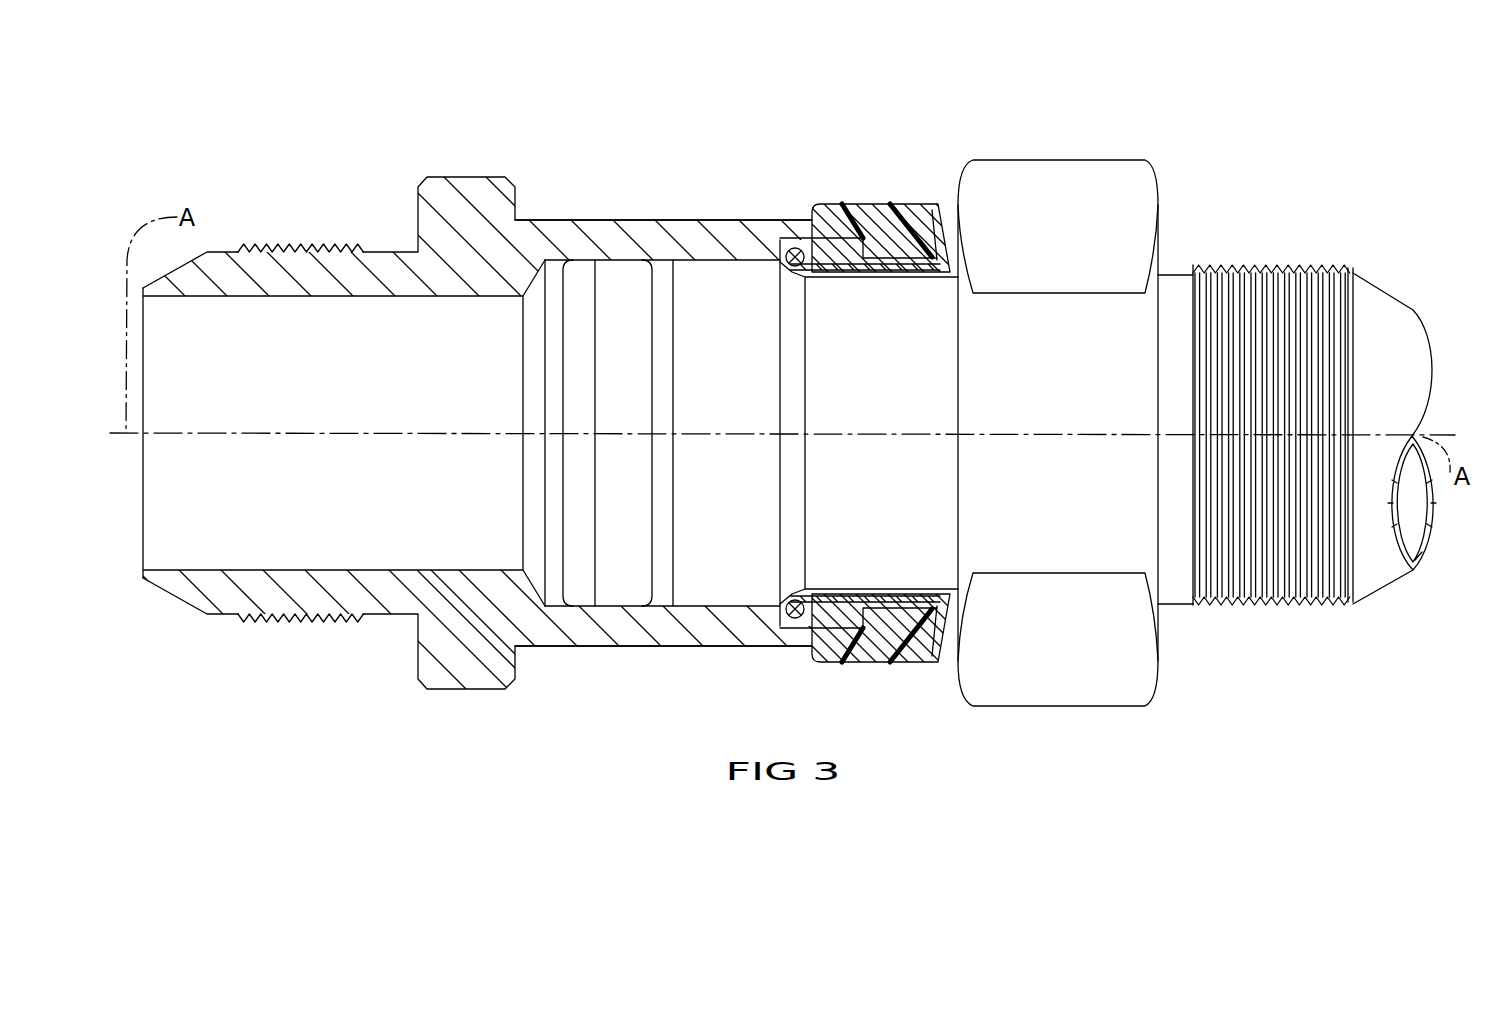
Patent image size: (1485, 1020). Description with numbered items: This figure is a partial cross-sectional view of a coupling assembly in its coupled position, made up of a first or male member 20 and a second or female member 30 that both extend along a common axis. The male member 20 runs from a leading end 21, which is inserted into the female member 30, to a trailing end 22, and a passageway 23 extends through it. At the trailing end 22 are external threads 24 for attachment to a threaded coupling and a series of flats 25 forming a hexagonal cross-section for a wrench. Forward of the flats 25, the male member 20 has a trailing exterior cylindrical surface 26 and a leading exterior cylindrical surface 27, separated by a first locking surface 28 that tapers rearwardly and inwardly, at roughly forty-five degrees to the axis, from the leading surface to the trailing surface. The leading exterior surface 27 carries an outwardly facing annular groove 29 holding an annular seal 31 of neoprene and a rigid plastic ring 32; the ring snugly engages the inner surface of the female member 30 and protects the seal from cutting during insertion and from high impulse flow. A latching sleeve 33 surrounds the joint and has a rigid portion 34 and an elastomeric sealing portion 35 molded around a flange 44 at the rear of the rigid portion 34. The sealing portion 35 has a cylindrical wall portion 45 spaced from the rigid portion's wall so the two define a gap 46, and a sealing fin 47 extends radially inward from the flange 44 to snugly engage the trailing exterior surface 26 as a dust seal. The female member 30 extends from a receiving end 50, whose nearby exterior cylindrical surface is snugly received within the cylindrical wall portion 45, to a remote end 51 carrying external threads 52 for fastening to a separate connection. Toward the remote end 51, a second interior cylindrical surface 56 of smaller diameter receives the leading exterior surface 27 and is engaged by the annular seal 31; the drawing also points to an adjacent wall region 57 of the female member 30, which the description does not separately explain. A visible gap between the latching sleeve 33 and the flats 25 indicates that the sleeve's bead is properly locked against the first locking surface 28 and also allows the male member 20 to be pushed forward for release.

The male member 20 is at (1183, 185).
The leading end 21 is at (547, 653).
The trailing end 22 is at (1433, 325).
The passageway 23 is at (1420, 573).
The external threads 24 is at (1278, 265).
The flats 25 is at (1080, 190).
The trailing exterior cylindrical surface 26 is at (864, 370).
The leading exterior cylindrical surface 27 is at (714, 370).
The first locking surface 28 is at (790, 478).
The annular groove 29 is at (670, 310).
The female member 30 is at (430, 150).
The annular seal 31 is at (610, 580).
The rigid plastic ring 32 is at (663, 600).
The latching sleeve 33 is at (867, 190).
The rigid portion 34 is at (848, 598).
The sealing portion 35 is at (855, 207).
The flange 44 is at (910, 665).
The cylindrical wall portion 45 is at (835, 663).
The gap 46 is at (875, 207).
The sealing fin 47 is at (940, 600).
The receiving end 50 is at (795, 245).
The remote end 51 is at (142, 552).
The external threads 52 is at (333, 240).
The second interior cylindrical surface 56 is at (547, 315).
The sleeve wall 57 is at (694, 258).